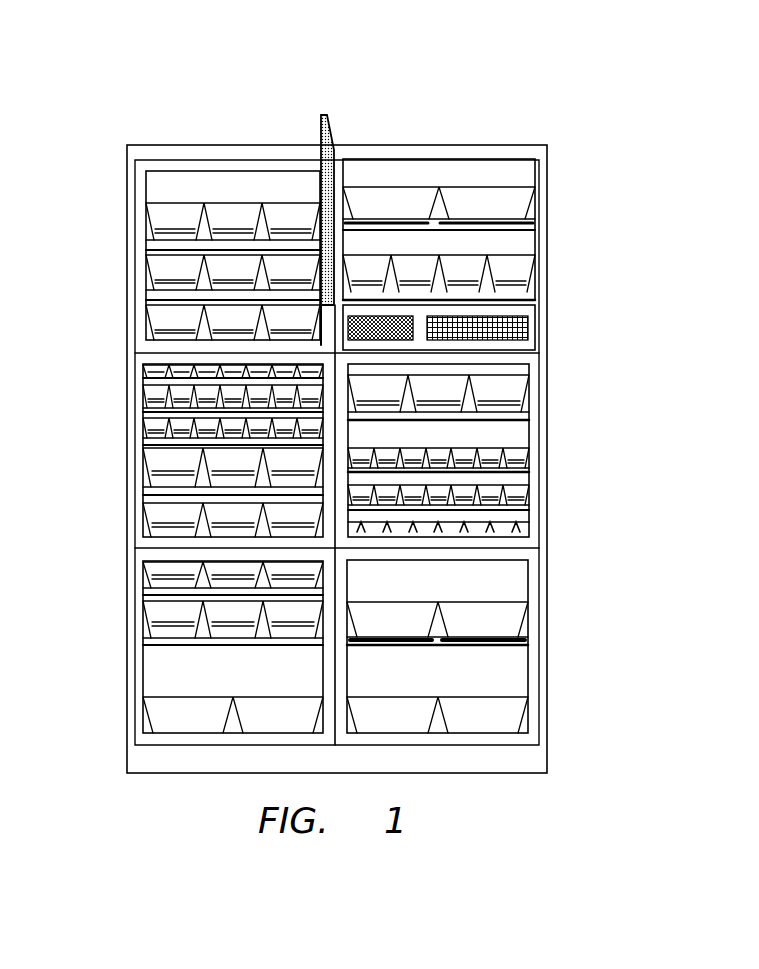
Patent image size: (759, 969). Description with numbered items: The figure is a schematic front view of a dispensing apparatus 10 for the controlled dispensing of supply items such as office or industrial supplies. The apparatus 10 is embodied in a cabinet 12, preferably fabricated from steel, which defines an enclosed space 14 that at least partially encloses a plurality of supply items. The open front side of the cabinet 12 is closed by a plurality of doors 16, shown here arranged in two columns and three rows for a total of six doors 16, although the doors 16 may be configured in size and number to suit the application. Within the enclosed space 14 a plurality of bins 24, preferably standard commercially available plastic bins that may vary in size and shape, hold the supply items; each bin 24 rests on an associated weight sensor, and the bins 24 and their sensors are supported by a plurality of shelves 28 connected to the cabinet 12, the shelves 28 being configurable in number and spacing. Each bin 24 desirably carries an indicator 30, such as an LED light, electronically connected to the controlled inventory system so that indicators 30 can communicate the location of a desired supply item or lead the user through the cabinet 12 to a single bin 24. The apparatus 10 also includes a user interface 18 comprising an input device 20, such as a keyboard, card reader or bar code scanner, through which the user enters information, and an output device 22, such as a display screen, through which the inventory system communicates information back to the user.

The dispensing apparatus 10 is at (522, 123).
The cabinet 12 is at (548, 192).
The enclosed space 14 is at (194, 246).
The doors 16 is at (322, 203).
The user interface 18 is at (528, 318).
The input device 20 is at (519, 337).
The output device 22 is at (408, 330).
The bins 24 is at (207, 432).
The shelves 28 is at (147, 246).
The indicator 30 is at (367, 292).